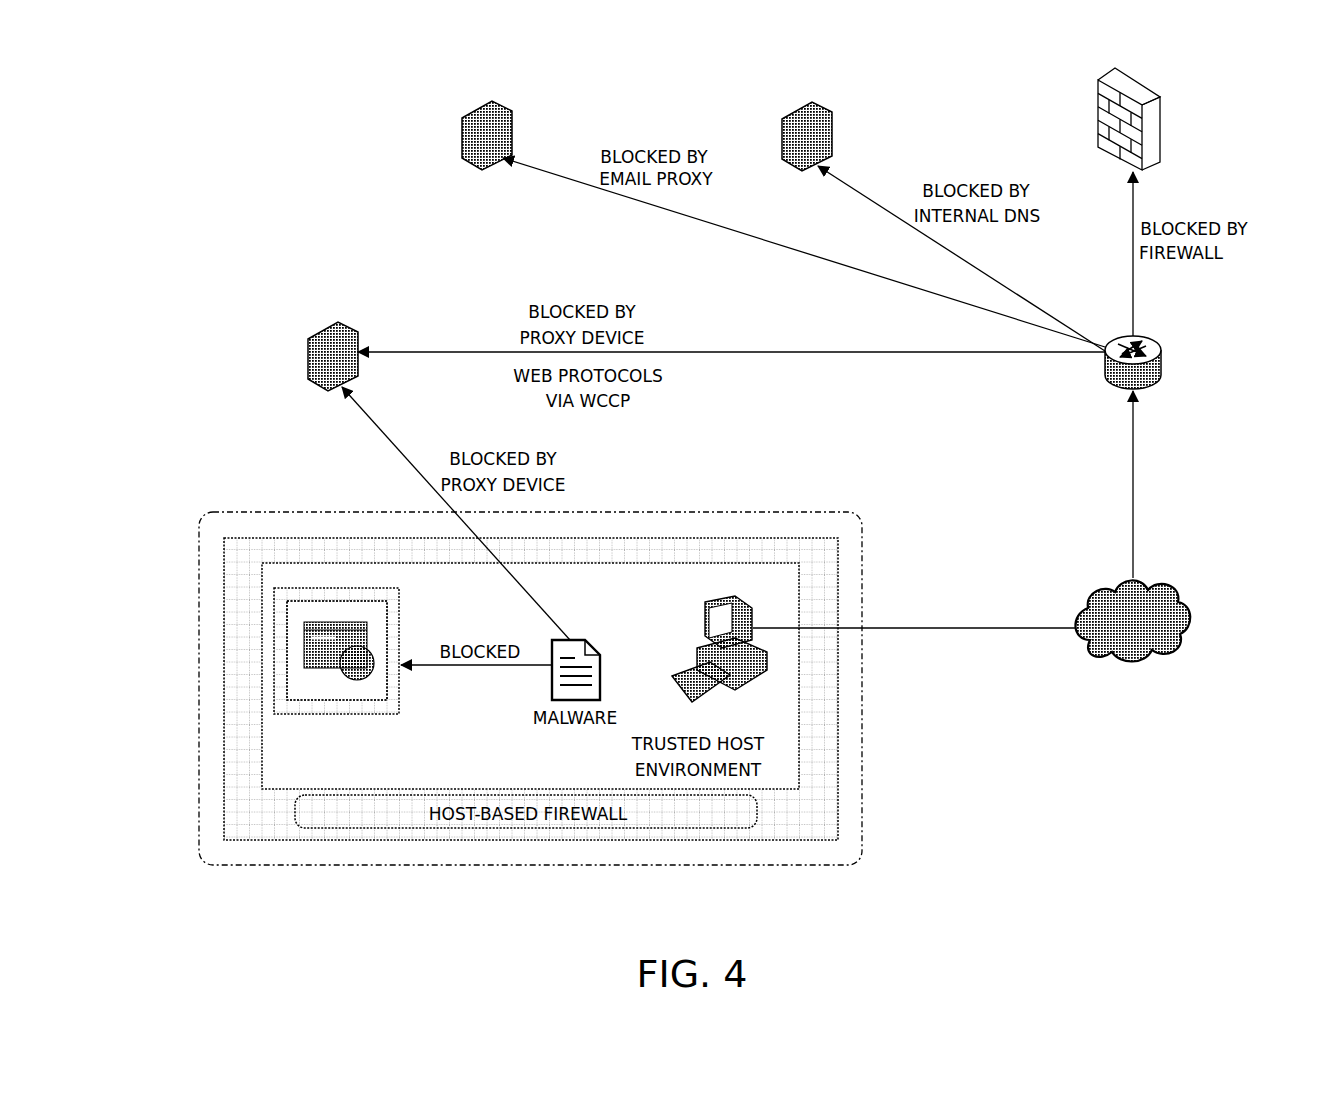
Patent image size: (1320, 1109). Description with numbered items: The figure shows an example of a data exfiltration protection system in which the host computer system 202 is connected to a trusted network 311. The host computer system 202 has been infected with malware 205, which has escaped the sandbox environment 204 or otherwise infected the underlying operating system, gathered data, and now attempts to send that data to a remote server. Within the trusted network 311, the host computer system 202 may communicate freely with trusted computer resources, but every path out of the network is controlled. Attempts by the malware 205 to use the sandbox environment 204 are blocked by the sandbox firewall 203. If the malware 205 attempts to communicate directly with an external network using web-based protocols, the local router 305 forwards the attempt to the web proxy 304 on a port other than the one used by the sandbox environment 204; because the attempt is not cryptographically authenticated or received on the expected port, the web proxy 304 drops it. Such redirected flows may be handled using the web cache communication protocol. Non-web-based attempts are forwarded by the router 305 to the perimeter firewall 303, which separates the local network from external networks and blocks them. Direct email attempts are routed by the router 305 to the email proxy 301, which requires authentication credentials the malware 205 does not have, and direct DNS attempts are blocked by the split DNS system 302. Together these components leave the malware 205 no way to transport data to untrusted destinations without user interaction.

The host computer system 202 is at (310, 512).
The sandbox firewall 203 is at (275, 640).
The sandbox environment 204 is at (295, 600).
The malware 205 is at (583, 640).
The email proxy 301 is at (480, 108).
The split DNS system 302 is at (800, 108).
The perimeter firewall 303 is at (1148, 95).
The web proxy 304 is at (335, 323).
The router 305 is at (1155, 338).
The trusted network 311 is at (1180, 585).